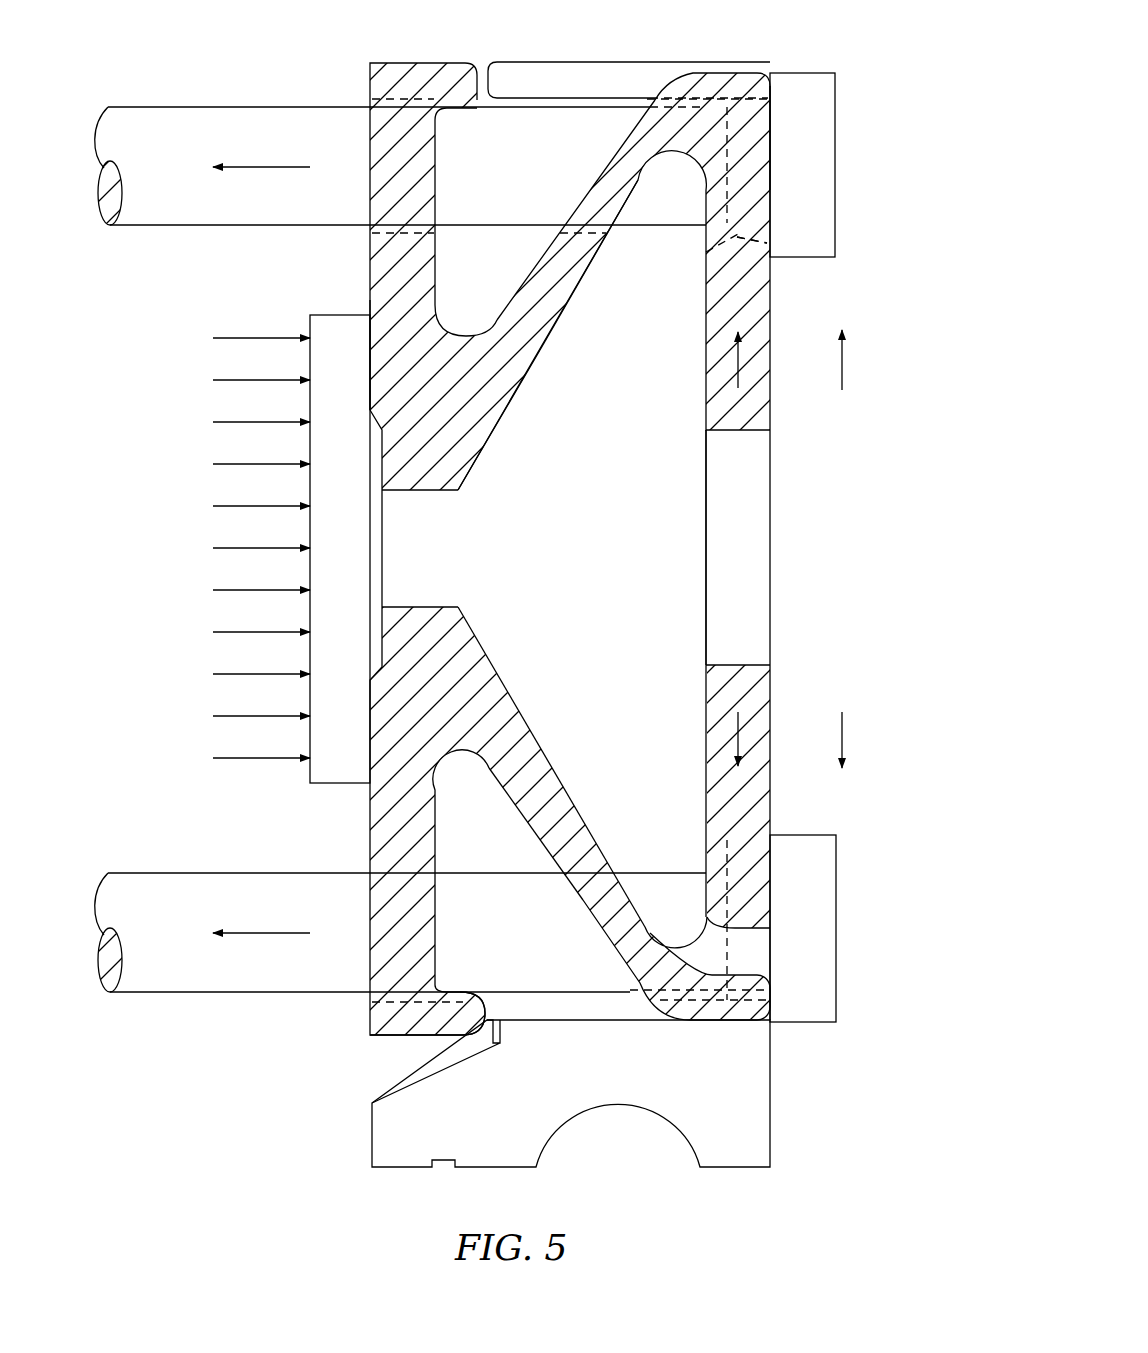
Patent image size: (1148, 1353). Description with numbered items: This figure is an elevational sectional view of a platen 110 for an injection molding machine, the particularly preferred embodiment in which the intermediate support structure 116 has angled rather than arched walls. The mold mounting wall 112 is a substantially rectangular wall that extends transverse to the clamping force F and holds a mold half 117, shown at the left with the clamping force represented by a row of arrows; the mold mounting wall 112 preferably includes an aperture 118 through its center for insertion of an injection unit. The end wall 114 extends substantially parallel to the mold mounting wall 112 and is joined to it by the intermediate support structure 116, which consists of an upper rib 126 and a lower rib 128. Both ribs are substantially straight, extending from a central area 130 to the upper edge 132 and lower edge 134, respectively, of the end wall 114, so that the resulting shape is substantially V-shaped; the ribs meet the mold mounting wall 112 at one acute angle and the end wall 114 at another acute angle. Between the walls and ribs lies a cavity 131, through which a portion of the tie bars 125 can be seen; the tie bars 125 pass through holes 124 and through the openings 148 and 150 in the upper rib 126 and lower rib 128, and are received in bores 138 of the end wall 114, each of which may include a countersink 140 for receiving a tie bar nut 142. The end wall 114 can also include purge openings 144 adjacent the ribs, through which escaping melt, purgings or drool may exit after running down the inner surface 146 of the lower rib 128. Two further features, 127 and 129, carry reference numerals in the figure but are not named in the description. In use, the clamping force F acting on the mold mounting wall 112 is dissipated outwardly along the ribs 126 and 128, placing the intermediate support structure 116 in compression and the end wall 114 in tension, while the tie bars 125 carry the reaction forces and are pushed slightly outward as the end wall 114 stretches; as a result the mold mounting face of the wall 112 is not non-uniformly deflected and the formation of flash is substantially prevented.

The platen 110 is at (600, 62).
The mold mounting wall 112 is at (370, 830).
The end wall 114 is at (770, 541).
The intermediate support structure 116 is at (580, 935).
The mold half 117 is at (310, 440).
The aperture 118 is at (435, 550).
The holes 124 is at (395, 1035).
The tie bars 125 is at (237, 993).
The upper rib 126 is at (603, 237).
The upper recess 127 is at (440, 172).
The lower rib 128 is at (535, 840).
The lower side wall portion 129 is at (705, 752).
The central area 130 is at (370, 350).
The cavity 131 is at (643, 632).
The upper edge 132 is at (727, 73).
The lower edge 134 is at (727, 1022).
The bores 138 is at (708, 110).
The countersink 140 is at (703, 252).
The tie bar nuts 142 is at (835, 180).
The purge openings 144 is at (753, 920).
The inner surface 146 is at (478, 643).
The openings 148 is at (587, 242).
The openings 150 is at (600, 855).